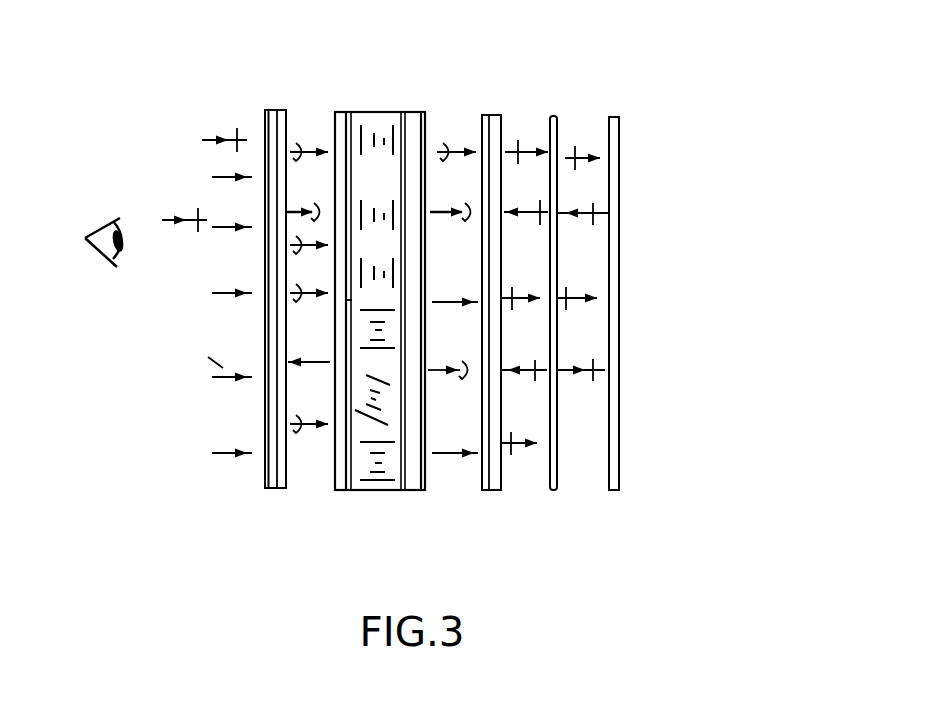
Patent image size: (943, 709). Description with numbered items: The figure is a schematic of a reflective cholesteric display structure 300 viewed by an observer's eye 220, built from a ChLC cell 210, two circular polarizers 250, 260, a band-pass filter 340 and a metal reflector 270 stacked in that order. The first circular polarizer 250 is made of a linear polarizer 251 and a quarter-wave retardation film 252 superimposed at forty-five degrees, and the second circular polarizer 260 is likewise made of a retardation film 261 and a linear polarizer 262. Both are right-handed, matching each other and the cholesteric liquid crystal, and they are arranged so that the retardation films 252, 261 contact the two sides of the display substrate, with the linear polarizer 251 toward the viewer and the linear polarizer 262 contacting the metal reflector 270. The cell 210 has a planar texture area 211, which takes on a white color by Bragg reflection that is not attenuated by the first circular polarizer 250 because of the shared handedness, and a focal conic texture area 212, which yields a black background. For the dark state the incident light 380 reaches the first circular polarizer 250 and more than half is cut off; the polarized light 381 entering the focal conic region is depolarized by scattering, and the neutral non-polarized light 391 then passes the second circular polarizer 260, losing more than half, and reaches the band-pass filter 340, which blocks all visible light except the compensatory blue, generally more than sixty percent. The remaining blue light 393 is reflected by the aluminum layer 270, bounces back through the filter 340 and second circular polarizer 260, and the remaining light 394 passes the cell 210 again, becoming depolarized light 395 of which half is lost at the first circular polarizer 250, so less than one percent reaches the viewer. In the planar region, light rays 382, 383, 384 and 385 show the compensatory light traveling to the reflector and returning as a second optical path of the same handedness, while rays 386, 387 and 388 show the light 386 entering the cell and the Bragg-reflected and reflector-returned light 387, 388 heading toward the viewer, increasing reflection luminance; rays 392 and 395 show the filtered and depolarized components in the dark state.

The display system 300 is at (82, 43).
The viewer eye 220 is at (108, 267).
The first circular polarizer 250 is at (273, 106).
The linear polarizer 251 is at (267, 502).
The quarter-wave retardation film 252 is at (283, 497).
The ChLC cell 210 is at (372, 110).
The planar texture area 211 is at (377, 206).
The focal conic texture area 212 is at (362, 458).
The second circular polarizer 260 is at (493, 111).
The quarter-wave retardation film 261 is at (482, 502).
The linear polarizer 262 is at (493, 503).
The band-pass filter 340 is at (551, 112).
The metal reflector 270 is at (612, 111).
The incident light 380 is at (227, 300).
The polarized light 381 is at (308, 147).
The light exiting display panel 382 is at (457, 147).
The light transmitted through second polarizer 383 is at (526, 139).
The reflected light returning through retarder 384 is at (526, 200).
The light exiting panel second region 385 is at (450, 198).
The light entering panel 386 is at (308, 198).
The light toward viewer 387 is at (190, 212).
The light toward viewer 388 is at (223, 135).
The neutral non-polarized light 391 is at (443, 298).
The light transmitted through second polarizer 392 is at (518, 290).
The remaining blue light 393 is at (581, 361).
The remaining light 394 is at (444, 362).
The depolarized light 395 is at (305, 357).